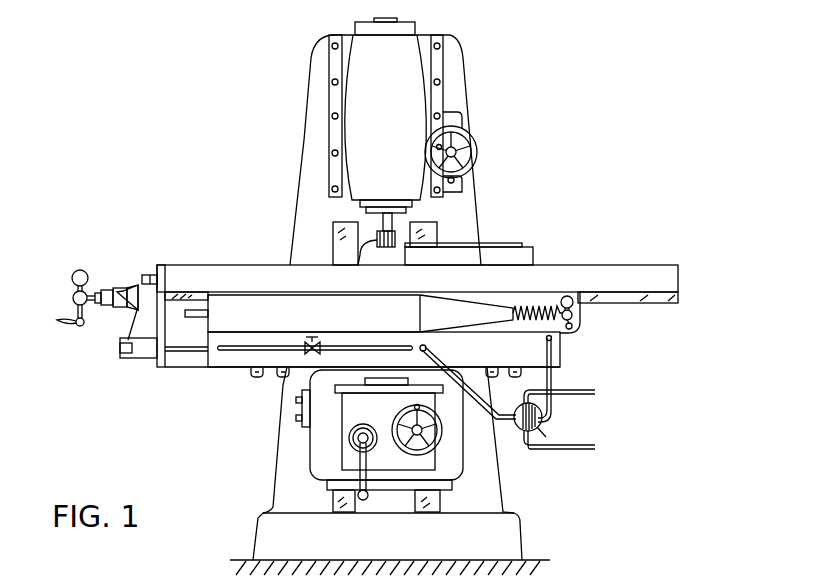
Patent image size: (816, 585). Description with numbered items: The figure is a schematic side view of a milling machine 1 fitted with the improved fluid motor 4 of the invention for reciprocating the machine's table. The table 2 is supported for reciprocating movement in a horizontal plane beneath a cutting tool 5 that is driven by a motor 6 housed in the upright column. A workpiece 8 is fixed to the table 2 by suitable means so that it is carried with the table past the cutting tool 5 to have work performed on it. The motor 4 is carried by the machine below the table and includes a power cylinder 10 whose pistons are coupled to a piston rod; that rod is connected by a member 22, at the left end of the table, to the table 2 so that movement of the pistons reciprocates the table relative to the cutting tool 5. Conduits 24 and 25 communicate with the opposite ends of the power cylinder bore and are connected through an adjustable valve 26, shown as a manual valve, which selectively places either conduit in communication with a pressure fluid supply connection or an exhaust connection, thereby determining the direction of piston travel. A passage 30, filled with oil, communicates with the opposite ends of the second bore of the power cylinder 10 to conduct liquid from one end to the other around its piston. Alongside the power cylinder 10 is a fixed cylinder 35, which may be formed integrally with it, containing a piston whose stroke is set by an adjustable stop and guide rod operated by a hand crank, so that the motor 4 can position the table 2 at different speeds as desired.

The milling machine 1 is at (259, 196).
The table 2 is at (205, 263).
The motor 4 is at (222, 368).
The cutting tool 5 is at (376, 258).
The motor 6 is at (422, 97).
The workpiece 8 is at (524, 246).
The power cylinder 10 is at (384, 349).
The member 22 is at (157, 369).
The conduit 24 is at (493, 378).
The conduit 25 is at (552, 381).
The adjustable valve 26 is at (541, 424).
The passage 30 is at (240, 349).
The fixed cylinder 35 is at (394, 312).